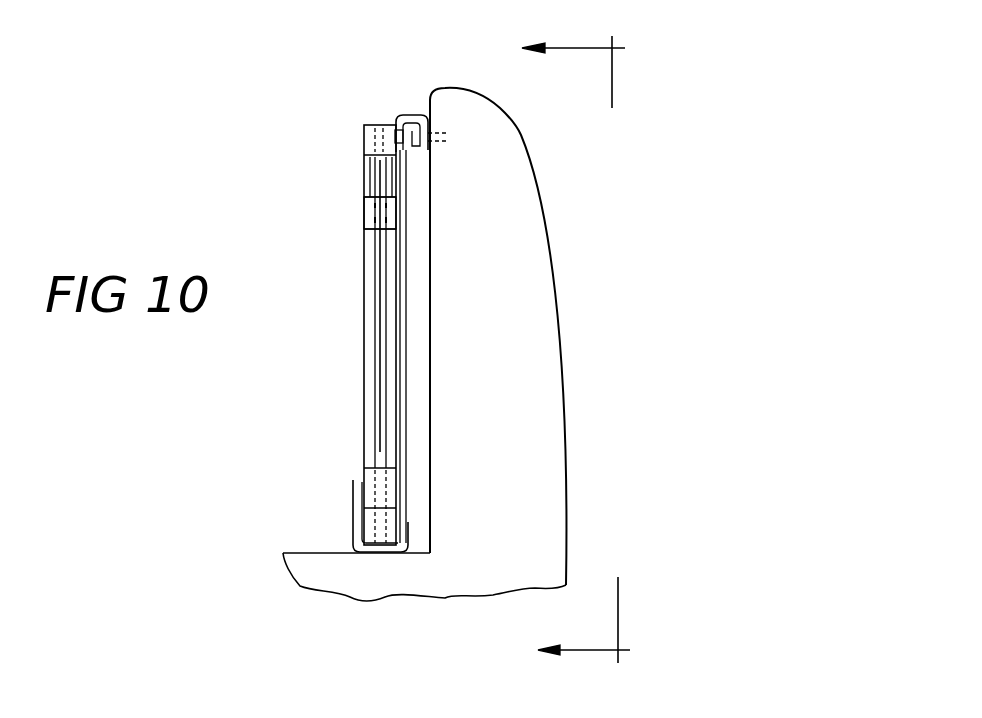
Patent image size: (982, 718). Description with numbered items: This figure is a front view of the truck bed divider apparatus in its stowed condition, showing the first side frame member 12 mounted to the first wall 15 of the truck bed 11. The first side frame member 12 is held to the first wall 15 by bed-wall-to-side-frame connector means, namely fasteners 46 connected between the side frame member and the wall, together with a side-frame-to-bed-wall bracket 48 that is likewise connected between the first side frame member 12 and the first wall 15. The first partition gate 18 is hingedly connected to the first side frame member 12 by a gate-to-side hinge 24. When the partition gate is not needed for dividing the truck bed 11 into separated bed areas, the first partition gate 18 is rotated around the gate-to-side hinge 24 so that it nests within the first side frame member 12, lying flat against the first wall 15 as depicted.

The truck bed 11 is at (592, 349).
The first side frame member 12 is at (364, 142).
The first wall 15 is at (565, 380).
The first partition gate 18 is at (364, 215).
The gate-to-side hinge 24 is at (382, 378).
The fastener 46 is at (440, 145).
The side-frame-to-bed-wall bracket 48 is at (406, 315).